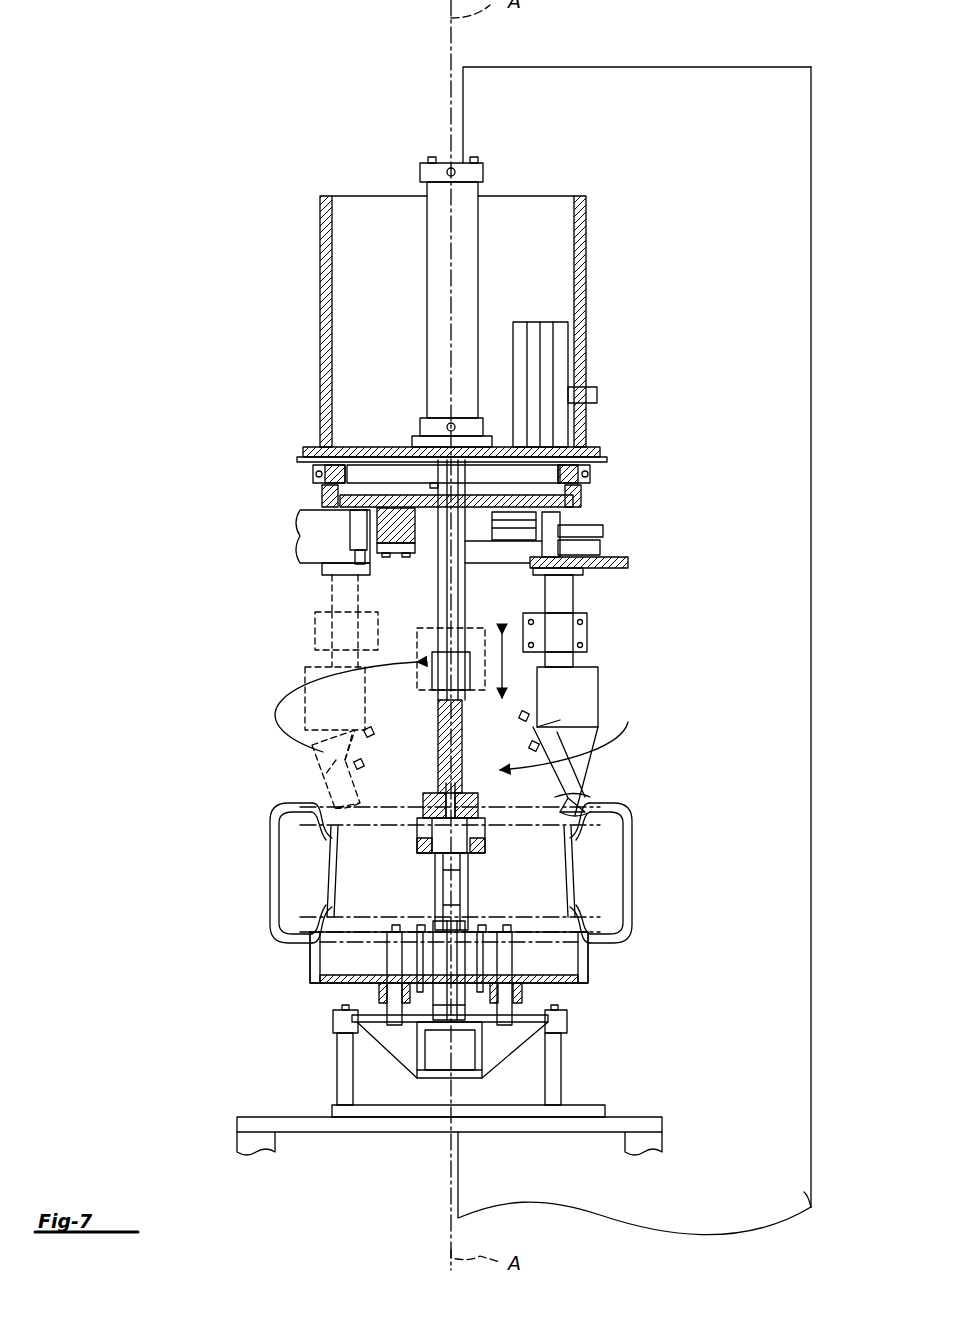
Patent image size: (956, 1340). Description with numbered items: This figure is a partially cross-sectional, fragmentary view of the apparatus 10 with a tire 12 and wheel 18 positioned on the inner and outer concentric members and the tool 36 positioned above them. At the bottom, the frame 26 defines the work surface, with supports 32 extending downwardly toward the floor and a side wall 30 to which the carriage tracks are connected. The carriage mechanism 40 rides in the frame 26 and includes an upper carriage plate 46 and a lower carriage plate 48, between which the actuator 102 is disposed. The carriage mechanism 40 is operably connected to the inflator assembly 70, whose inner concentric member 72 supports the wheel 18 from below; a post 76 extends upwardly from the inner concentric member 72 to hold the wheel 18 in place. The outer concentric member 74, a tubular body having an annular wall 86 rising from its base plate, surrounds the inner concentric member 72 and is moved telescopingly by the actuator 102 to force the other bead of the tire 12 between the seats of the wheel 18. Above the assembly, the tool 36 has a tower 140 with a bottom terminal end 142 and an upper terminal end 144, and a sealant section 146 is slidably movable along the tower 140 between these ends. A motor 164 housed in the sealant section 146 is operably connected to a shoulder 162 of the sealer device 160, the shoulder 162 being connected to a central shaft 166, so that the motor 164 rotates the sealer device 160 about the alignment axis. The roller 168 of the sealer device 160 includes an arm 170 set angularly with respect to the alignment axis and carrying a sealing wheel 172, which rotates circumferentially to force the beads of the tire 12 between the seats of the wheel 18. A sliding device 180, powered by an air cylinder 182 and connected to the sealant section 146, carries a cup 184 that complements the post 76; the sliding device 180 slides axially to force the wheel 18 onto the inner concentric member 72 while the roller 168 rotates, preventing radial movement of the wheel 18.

The apparatus 10 is at (255, 240).
The tool 36 is at (448, 95).
The upper terminal end 144 is at (752, 67).
The tower 140 is at (811, 368).
The bottom terminal end 142 is at (806, 1200).
The sealant section 146 is at (371, 190).
The air cylinder 182 is at (427, 292).
The motor 164 is at (565, 348).
The shoulder 162 is at (610, 557).
The central shaft 166 is at (568, 590).
The sealer device 160 is at (614, 627).
The roller 168 is at (592, 682).
The arm 170 is at (540, 745).
The sealing wheel 172 is at (590, 797).
The sliding device 180 is at (446, 728).
The cup 184 is at (425, 795).
The post 76 is at (433, 885).
The tire 12 is at (632, 862).
The wheel 18 is at (505, 830).
The inner concentric member 72 is at (548, 910).
The inflator assembly 70 is at (303, 957).
The annular wall 86 is at (590, 955).
The outer concentric member 74 is at (570, 985).
The upper carriage plate 46 is at (520, 1010).
The carriage mechanism 40 is at (618, 1068).
The side wall 30 is at (333, 1030).
The actuator 102 is at (460, 1050).
The lower carriage plate 48 is at (432, 1075).
The frame 26 is at (280, 1117).
The supports 32 is at (236, 1142).